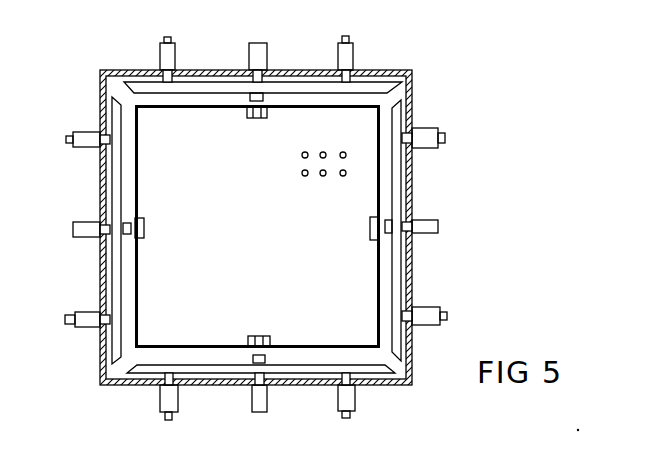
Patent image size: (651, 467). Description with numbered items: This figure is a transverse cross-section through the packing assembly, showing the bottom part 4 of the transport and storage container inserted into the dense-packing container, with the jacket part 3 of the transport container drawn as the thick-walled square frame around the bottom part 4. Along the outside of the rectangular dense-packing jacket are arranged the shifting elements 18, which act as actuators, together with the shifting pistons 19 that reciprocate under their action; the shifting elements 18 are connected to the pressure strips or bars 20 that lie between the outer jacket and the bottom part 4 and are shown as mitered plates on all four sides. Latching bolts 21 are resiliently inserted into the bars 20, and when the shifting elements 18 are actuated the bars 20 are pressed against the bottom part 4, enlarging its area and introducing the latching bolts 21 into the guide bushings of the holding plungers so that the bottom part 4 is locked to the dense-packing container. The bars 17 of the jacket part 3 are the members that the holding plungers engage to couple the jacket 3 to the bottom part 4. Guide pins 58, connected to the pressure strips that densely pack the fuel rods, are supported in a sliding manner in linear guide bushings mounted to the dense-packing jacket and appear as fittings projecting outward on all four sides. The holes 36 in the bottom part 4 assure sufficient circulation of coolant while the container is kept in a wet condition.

The jacket part 3 is at (328, 345).
The bottom part 4 is at (236, 272).
The bars 17 is at (256, 119).
The shifting elements 18 is at (258, 50).
The shifting pistons 19 is at (262, 79).
The pressure strips or bars 20 is at (390, 83).
The latching bolts 21 is at (264, 98).
The holes 36 is at (306, 176).
The guide pins 58 is at (172, 40).